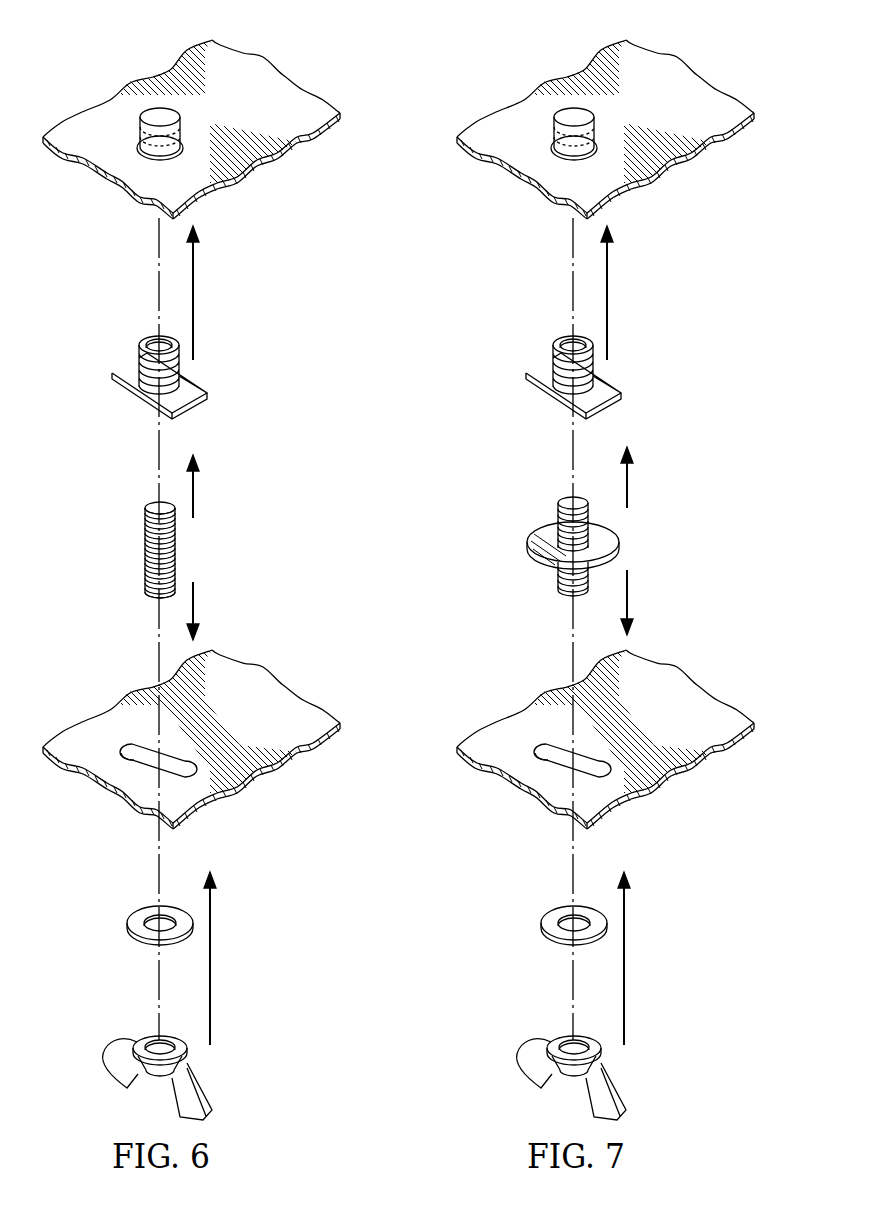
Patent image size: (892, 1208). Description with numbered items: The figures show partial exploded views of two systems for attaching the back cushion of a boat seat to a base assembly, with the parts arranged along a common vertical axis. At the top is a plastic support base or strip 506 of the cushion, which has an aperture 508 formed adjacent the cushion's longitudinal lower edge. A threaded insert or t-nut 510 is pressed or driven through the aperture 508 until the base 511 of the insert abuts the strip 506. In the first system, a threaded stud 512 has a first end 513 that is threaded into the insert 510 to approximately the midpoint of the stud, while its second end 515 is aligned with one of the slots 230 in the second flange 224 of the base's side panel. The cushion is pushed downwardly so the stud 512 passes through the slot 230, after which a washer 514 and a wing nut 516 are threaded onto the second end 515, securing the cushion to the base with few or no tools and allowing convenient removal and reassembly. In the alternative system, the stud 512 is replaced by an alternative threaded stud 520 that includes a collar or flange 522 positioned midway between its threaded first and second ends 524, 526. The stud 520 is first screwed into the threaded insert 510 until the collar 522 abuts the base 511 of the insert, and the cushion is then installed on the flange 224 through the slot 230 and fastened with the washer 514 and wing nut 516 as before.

In FIG. 6, the support strip 506 is at (248, 65).
In FIG. 7, the support strip 506 is at (605, 118).
In FIG. 6, the aperture 508 is at (137, 142).
In FIG. 7, the aperture 508 is at (527, 119).
In FIG. 6, the threaded insert 510 is at (190, 124).
In FIG. 7, the threaded insert 510 is at (581, 244).
In FIG. 6, the base of the insert 511 is at (125, 372).
In FIG. 7, the base of the insert 511 is at (539, 385).
In FIG. 6, the threaded stud 512 is at (190, 554).
In FIG. 6, the first end of stud 513 is at (146, 518).
In FIG. 6, the second end of stud 515 is at (146, 585).
In FIG. 6, the second flange 224 is at (258, 683).
In FIG. 7, the second flange 224 is at (605, 731).
In FIG. 6, the slots 230 is at (140, 738).
In FIG. 7, the slots 230 is at (548, 727).
In FIG. 6, the washer 514 is at (140, 945).
In FIG. 7, the washer 514 is at (559, 949).
In FIG. 6, the wing nut 516 is at (120, 1072).
In FIG. 7, the wing nut 516 is at (549, 1078).
In FIG. 7, the alternative threaded stud 520 is at (569, 549).
In FIG. 7, the collar 522 is at (612, 545).
In FIG. 7, the first end of alternative stud 524 is at (543, 517).
In FIG. 7, the second end of alternative stud 526 is at (543, 588).